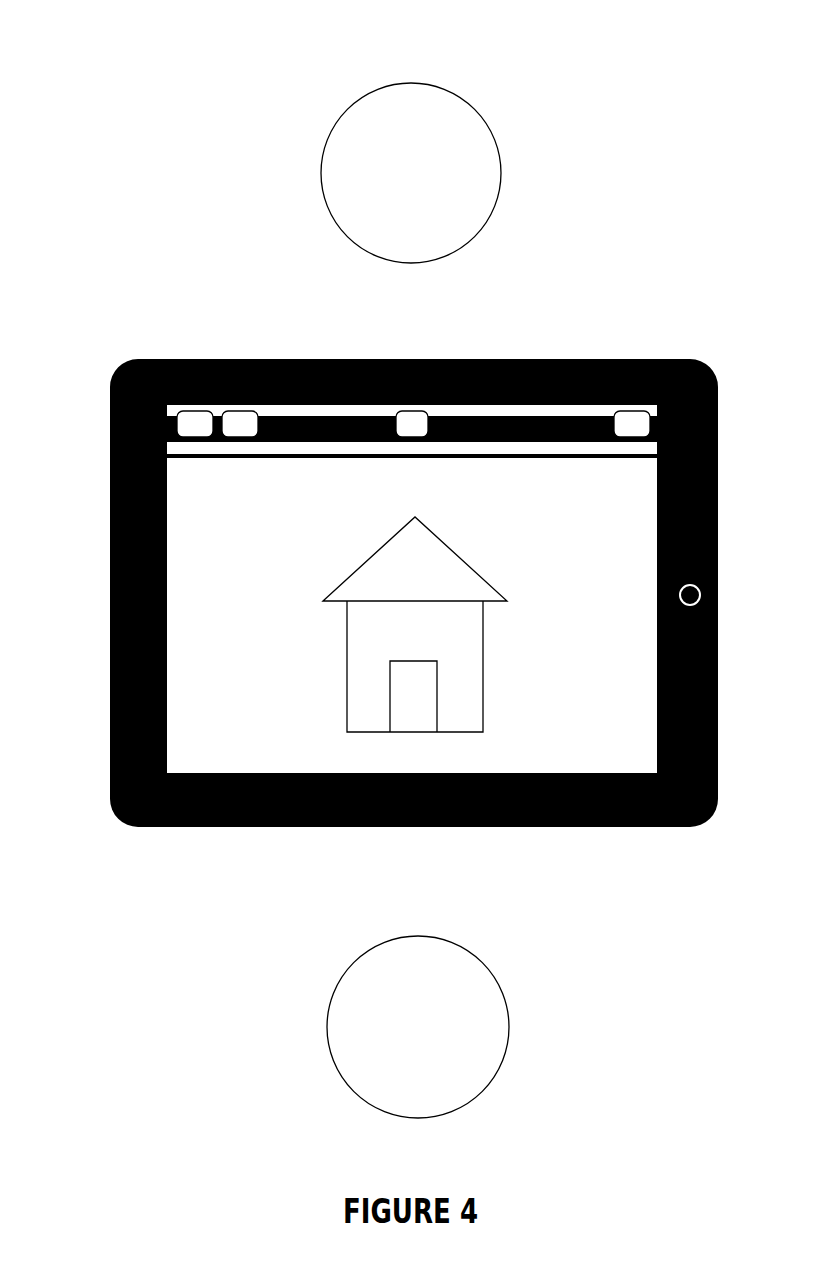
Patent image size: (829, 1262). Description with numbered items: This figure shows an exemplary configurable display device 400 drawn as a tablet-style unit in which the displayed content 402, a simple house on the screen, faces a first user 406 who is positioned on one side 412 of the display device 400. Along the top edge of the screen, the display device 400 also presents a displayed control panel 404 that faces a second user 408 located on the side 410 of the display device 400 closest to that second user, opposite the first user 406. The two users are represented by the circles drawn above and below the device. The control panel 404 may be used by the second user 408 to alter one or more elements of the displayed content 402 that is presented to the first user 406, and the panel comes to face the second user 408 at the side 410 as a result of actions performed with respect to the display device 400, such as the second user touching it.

The display device 400 is at (746, 138).
The displayed content 402 is at (217, 637).
The displayed control panel 404 is at (538, 436).
The first user 406 is at (508, 1028).
The second user 408 is at (500, 170).
The side of the display device closest to the second user 410 is at (297, 360).
The side of the display device 412 is at (600, 829).